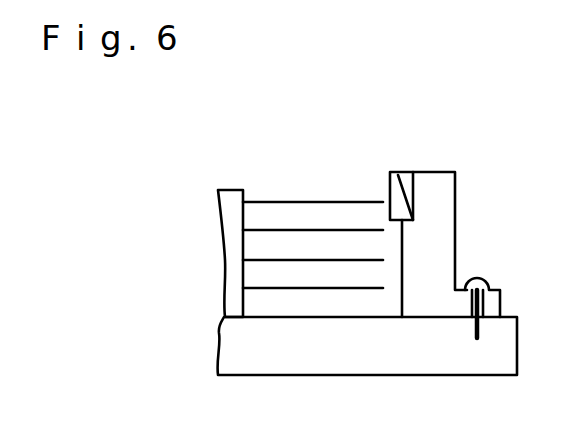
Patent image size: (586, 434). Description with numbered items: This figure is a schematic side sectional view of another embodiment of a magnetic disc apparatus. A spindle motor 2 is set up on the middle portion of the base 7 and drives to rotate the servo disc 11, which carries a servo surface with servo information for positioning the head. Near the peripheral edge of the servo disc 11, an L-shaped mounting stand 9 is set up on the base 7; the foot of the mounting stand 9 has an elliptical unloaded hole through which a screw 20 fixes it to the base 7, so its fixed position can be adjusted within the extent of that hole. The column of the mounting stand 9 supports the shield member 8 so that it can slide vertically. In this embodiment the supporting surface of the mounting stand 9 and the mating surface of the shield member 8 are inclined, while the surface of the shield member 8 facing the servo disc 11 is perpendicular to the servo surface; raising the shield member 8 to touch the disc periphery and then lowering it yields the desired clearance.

The spindle motor 2 is at (232, 187).
The base 7 is at (407, 377).
The shield member 8 is at (398, 172).
The mounting stand 9 is at (455, 172).
The servo disc 11 is at (295, 200).
The screw 20 is at (485, 276).